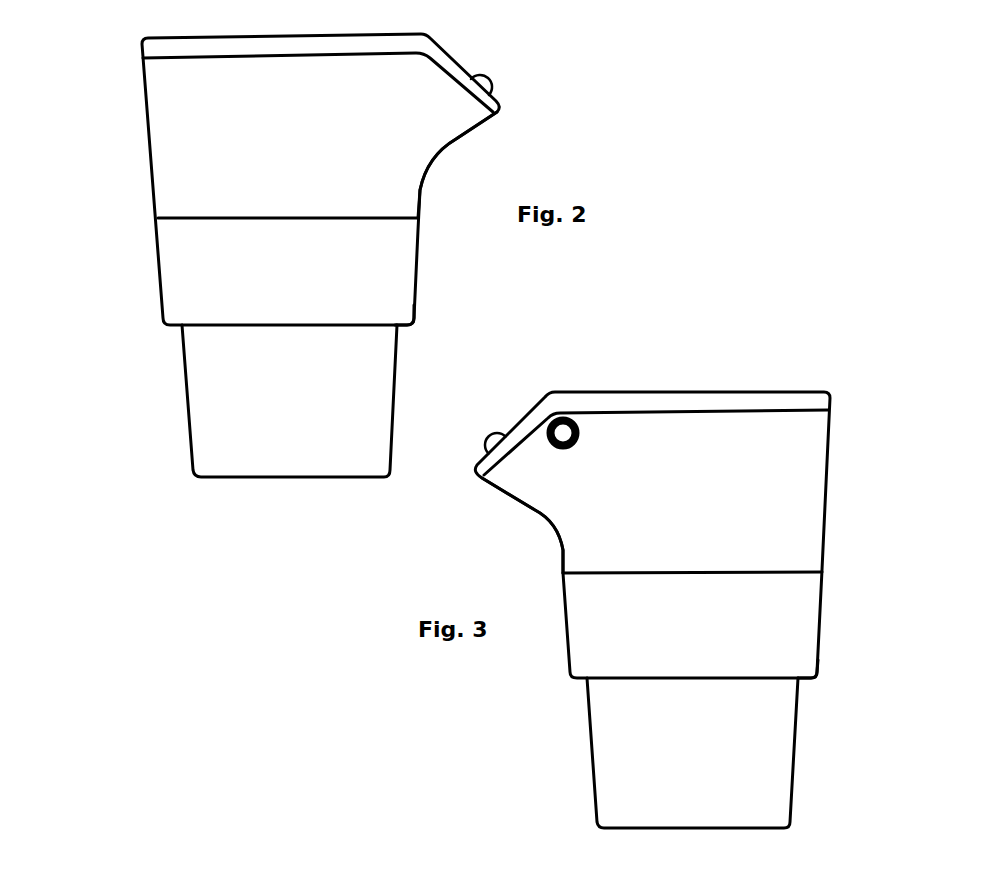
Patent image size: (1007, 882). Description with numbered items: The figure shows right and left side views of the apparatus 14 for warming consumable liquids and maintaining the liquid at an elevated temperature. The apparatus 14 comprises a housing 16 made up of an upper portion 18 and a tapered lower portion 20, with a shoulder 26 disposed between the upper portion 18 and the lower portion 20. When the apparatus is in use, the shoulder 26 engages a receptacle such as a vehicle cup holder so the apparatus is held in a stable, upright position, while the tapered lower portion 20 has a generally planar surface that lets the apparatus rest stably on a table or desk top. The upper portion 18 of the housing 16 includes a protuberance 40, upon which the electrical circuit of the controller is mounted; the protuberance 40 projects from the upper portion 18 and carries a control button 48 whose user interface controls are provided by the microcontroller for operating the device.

In FIG. 2, the apparatus 14 is at (472, 173).
In FIG. 3, the apparatus 14 is at (834, 550).
In FIG. 2, the housing 16 is at (420, 248).
In FIG. 3, the housing 16 is at (553, 550).
In FIG. 2, the upper portion 18 is at (133, 93).
In FIG. 3, the upper portion 18 is at (797, 440).
In FIG. 2, the tapered lower portion 20 is at (218, 430).
In FIG. 3, the tapered lower portion 20 is at (618, 768).
In FIG. 2, the shoulder 26 is at (400, 328).
In FIG. 3, the shoulder 26 is at (807, 680).
In FIG. 2, the protuberance 40 is at (413, 120).
In FIG. 3, the protuberance 40 is at (527, 483).
In FIG. 2, the control button 48 is at (490, 80).
In FIG. 3, the control button 48 is at (488, 440).